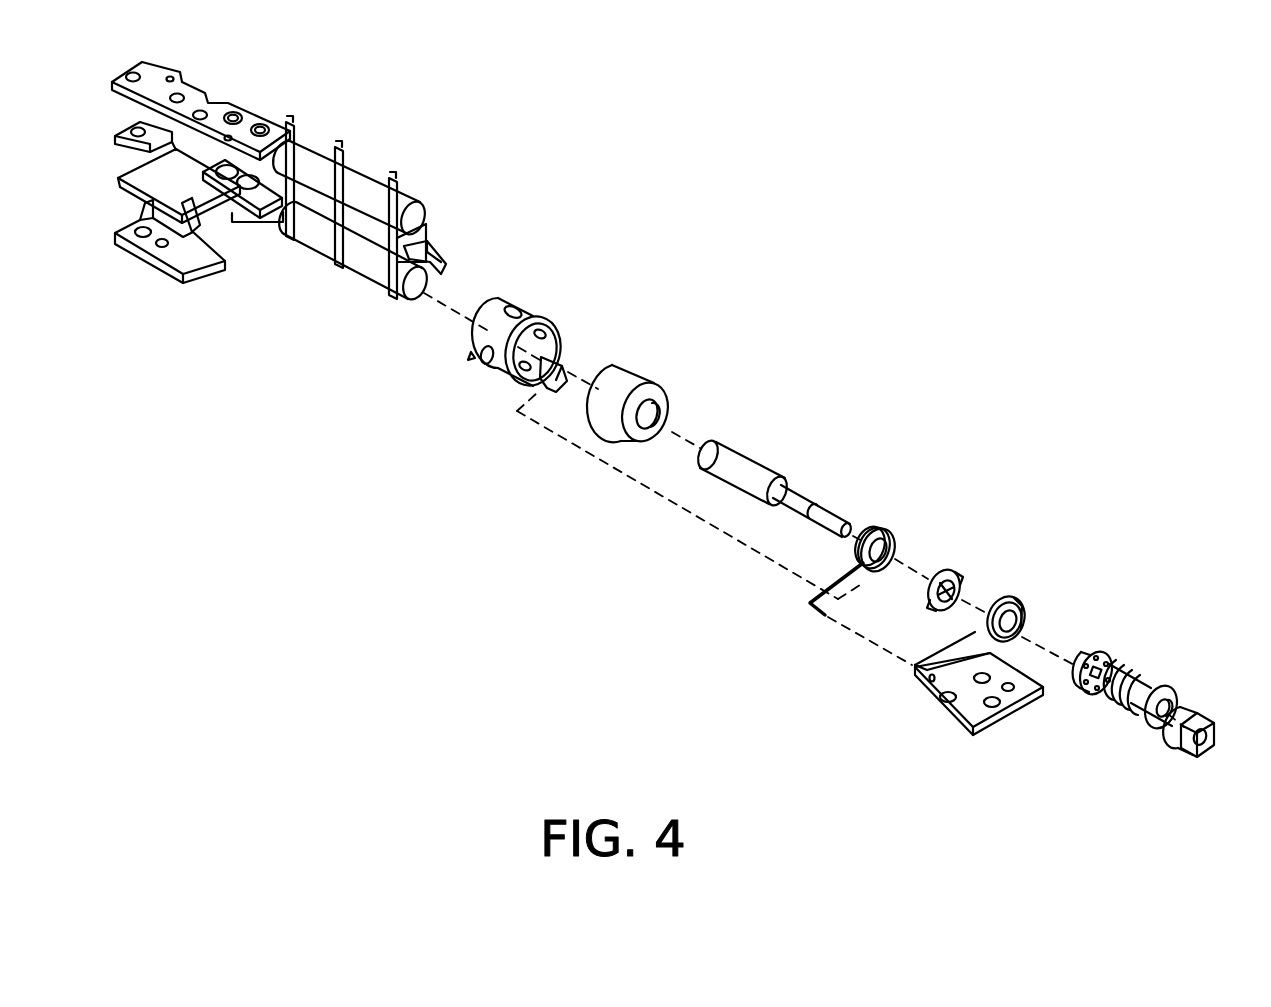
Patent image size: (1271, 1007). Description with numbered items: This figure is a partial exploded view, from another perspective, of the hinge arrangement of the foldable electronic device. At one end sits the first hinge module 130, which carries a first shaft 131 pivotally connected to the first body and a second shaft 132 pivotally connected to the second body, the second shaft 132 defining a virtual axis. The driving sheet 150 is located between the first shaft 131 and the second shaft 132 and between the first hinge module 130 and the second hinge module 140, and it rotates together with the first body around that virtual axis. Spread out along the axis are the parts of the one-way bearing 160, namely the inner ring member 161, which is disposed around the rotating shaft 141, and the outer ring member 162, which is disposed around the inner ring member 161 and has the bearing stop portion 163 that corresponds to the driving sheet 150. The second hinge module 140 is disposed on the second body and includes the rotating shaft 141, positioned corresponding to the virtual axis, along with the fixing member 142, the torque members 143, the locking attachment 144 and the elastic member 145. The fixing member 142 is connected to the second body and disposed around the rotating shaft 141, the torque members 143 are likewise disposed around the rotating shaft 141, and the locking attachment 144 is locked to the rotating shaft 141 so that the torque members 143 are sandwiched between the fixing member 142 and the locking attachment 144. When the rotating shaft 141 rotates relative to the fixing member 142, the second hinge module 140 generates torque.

The first hinge module 130 is at (290, 169).
The first shaft 131 is at (373, 190).
The second shaft 132 is at (370, 243).
The driving sheet 150 is at (437, 252).
The one-way bearing 160 is at (555, 322).
The inner ring member 161 is at (631, 359).
The outer ring member 162 is at (533, 310).
The bearing stop portion 163 is at (471, 360).
The second hinge module 140 is at (975, 566).
The rotating shaft 141 is at (753, 472).
The fixing member 142 is at (987, 637).
The torque members 143 is at (1176, 680).
The locking attachment 144 is at (1206, 665).
The elastic member 145 is at (885, 532).